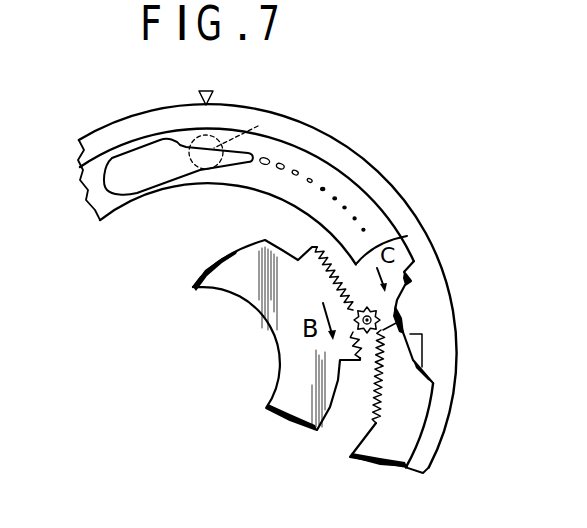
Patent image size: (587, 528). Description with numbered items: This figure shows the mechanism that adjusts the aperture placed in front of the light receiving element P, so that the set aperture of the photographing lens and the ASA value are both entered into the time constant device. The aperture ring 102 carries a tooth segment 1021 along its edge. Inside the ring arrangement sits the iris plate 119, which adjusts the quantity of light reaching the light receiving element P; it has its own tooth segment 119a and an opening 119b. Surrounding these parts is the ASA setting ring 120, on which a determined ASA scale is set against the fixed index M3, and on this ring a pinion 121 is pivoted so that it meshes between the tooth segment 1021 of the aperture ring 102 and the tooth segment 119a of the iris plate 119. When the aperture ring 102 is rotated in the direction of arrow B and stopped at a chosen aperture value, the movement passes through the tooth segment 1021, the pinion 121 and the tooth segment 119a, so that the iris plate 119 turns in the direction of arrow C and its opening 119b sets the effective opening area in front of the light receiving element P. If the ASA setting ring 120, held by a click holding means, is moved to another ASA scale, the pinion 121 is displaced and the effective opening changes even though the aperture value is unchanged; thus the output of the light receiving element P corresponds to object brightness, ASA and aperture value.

The aperture ring 102 is at (229, 281).
The tooth segment 1021 is at (337, 270).
The iris plate 119 is at (115, 210).
The tooth segment 119a is at (407, 236).
The opening 119b is at (308, 183).
The ASA setting ring 120 is at (335, 156).
The pinion 121 is at (397, 318).
The fixed index M3 is at (211, 92).
The light receiving element P is at (260, 120).